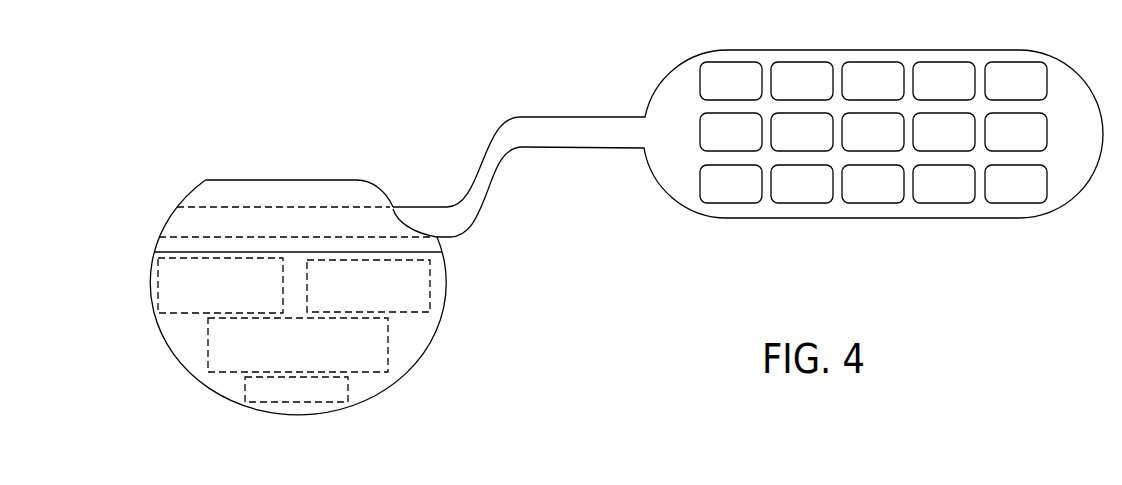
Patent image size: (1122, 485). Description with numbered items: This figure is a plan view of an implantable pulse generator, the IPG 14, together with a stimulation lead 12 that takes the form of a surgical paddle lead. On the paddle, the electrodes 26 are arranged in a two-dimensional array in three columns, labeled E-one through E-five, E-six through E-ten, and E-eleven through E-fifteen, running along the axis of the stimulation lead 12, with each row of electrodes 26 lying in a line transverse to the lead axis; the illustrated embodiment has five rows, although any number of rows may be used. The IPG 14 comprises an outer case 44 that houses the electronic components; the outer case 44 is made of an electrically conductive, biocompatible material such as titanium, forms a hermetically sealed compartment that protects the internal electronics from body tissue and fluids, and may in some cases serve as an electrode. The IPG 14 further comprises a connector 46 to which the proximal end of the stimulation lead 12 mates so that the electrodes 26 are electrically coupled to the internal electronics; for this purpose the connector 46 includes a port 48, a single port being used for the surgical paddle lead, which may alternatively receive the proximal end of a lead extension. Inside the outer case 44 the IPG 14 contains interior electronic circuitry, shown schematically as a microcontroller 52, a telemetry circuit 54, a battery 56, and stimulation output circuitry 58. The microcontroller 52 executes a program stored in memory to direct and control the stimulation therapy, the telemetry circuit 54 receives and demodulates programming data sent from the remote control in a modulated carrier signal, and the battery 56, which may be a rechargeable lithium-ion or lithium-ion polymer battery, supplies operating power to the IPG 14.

The stimulation lead 12 is at (493, 125).
The implantable pulse generator (IPG) 14 is at (216, 107).
The electrodes 26 is at (870, 62).
The outer case 44 is at (424, 355).
The connector 46 is at (254, 178).
The port 48 is at (316, 236).
The microcontroller 52 is at (158, 284).
The telemetry circuit 54 is at (430, 287).
The battery 56 is at (245, 392).
The stimulation output circuitry 58 is at (208, 337).